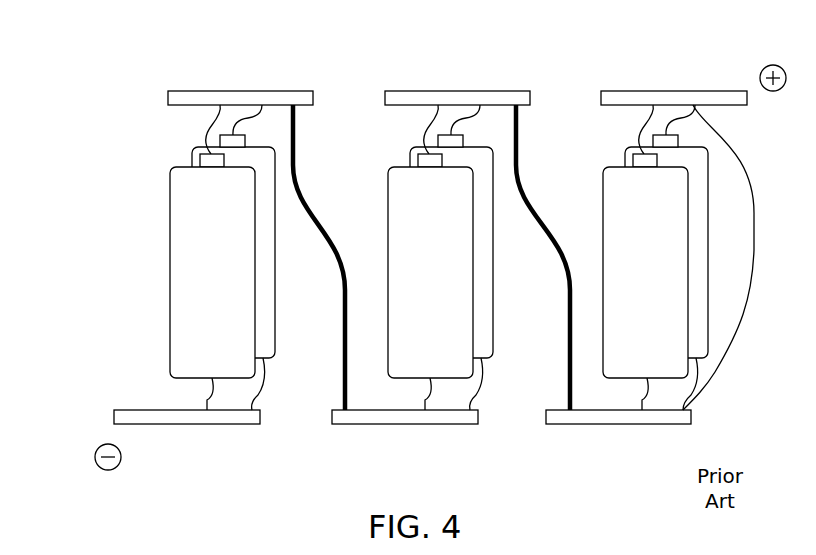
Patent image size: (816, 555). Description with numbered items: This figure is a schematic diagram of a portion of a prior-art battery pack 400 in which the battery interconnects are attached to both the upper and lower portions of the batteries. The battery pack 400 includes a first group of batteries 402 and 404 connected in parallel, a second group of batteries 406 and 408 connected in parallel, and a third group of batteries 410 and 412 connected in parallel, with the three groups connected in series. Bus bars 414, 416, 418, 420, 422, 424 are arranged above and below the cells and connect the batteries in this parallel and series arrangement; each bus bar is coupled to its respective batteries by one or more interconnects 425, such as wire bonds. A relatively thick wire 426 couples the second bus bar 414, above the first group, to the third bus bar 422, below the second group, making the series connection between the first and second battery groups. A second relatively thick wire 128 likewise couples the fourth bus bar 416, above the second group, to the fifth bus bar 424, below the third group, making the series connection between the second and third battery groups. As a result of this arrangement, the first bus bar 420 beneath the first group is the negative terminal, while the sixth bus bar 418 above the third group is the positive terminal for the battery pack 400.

The battery pack 400 is at (100, 73).
The battery 402 is at (170, 233).
The battery 404 is at (192, 157).
The battery 406 is at (388, 255).
The battery 408 is at (410, 157).
The battery 410 is at (603, 228).
The battery 412 is at (625, 157).
The second bus bar 414 is at (186, 91).
The fourth bus bar 416 is at (404, 91).
The sixth bus bar 418 is at (619, 91).
The first bus bar 420 is at (232, 425).
The third bus bar 422 is at (425, 425).
The fifth bus bar 424 is at (654, 425).
The interconnects 425 is at (754, 250).
The relatively thick wire 426 is at (342, 302).
The series connection cable 128 is at (567, 318).